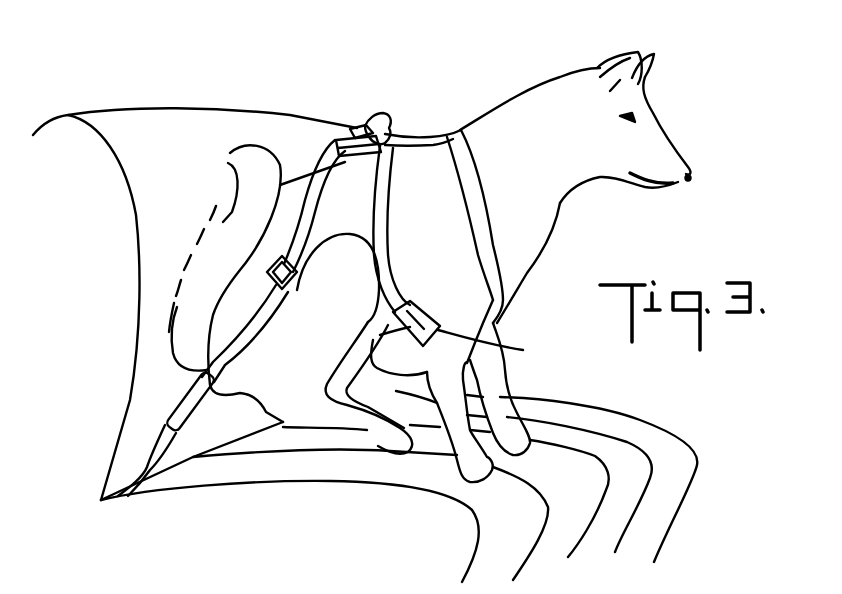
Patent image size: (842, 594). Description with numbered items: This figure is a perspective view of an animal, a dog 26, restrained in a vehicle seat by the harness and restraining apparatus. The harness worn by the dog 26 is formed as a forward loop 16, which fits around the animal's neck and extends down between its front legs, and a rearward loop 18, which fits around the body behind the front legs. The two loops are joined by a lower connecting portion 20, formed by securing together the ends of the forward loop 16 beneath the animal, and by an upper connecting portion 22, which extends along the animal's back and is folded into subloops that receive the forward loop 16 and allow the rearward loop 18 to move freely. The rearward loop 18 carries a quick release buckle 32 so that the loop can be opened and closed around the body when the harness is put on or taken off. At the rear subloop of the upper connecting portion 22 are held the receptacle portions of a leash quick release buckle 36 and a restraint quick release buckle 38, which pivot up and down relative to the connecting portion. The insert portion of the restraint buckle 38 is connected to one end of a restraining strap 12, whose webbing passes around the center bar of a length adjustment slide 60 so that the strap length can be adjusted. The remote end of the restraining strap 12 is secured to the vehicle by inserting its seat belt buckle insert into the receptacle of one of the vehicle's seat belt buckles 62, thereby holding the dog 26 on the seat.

The restraining strap 12 is at (243, 343).
The forward loop 16 is at (473, 193).
The rearward loop 18 is at (390, 221).
The lower connecting portion 20 is at (523, 350).
The upper connecting portion 22 is at (427, 140).
The dog 26 is at (523, 80).
The quick release buckle 32 is at (422, 303).
The leash quick release buckle 36 is at (389, 113).
The restraint quick release buckle 38 is at (353, 133).
The length adjustment slide 60 is at (280, 290).
The seat belt buckle 62 is at (167, 410).